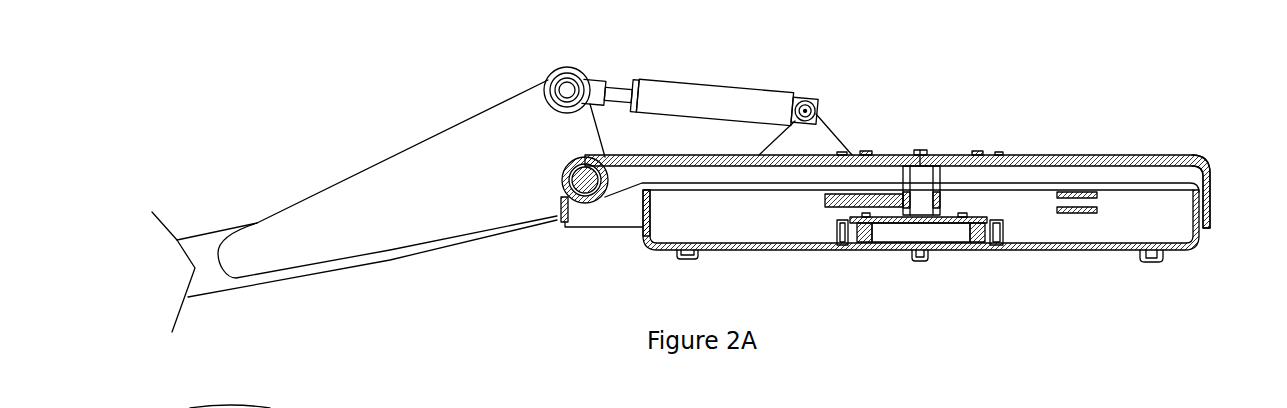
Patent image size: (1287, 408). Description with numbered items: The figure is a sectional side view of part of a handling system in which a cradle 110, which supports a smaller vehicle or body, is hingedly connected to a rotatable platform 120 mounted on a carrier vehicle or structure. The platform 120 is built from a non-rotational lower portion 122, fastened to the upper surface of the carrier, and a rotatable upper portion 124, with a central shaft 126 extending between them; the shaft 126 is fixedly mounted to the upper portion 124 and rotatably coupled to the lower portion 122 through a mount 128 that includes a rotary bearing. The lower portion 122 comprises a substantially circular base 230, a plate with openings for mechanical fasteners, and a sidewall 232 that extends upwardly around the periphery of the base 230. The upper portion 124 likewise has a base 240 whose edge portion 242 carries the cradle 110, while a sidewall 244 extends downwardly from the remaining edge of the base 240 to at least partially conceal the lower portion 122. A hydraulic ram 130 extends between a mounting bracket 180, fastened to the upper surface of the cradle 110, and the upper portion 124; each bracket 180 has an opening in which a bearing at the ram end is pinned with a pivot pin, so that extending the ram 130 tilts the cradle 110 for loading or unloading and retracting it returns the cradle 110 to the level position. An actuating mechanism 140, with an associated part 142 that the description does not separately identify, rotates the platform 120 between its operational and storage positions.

The cradle 110 is at (188, 222).
The rotatable platform 120 is at (933, 102).
The non-rotational lower portion 122 is at (1187, 249).
The rotatable upper portion 124 is at (1100, 156).
The central shaft 126 is at (920, 177).
The mount 128 is at (920, 233).
The hydraulic ram 130 is at (683, 77).
The actuating mechanism 140 is at (818, 198).
The slide bar 142 is at (840, 194).
The mounting bracket 180 is at (818, 135).
The base 230 is at (753, 248).
The sidewall 232 is at (640, 207).
The base 240 is at (1167, 157).
The edge portion 242 is at (557, 217).
The sidewall 244 is at (1210, 196).